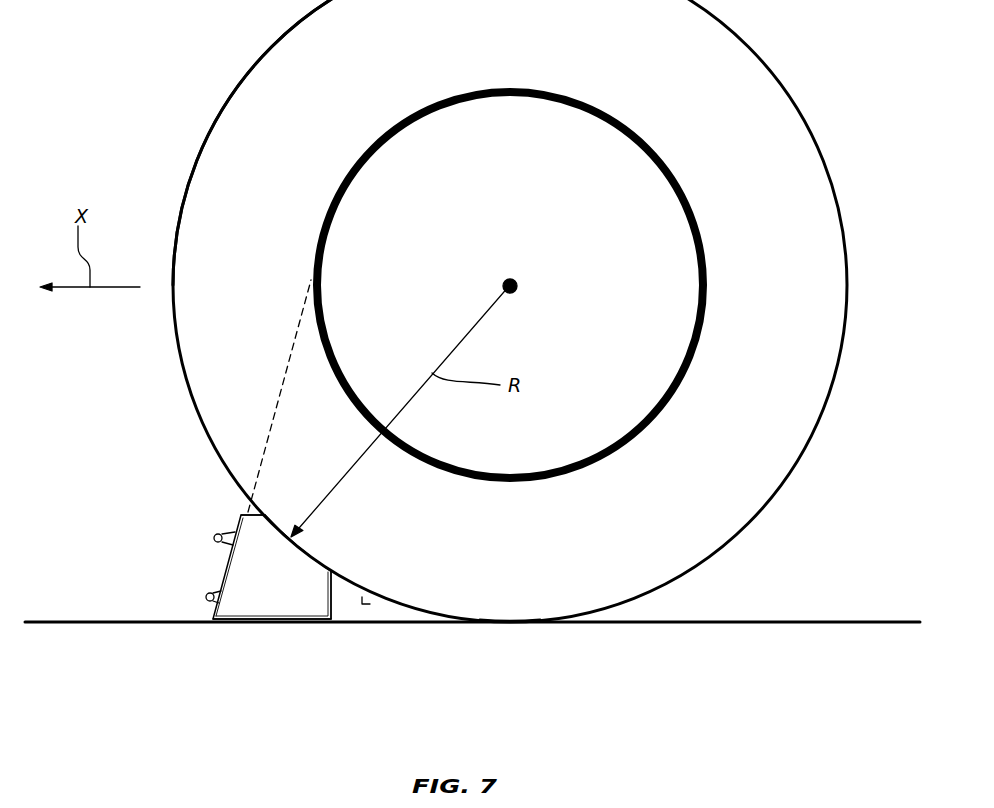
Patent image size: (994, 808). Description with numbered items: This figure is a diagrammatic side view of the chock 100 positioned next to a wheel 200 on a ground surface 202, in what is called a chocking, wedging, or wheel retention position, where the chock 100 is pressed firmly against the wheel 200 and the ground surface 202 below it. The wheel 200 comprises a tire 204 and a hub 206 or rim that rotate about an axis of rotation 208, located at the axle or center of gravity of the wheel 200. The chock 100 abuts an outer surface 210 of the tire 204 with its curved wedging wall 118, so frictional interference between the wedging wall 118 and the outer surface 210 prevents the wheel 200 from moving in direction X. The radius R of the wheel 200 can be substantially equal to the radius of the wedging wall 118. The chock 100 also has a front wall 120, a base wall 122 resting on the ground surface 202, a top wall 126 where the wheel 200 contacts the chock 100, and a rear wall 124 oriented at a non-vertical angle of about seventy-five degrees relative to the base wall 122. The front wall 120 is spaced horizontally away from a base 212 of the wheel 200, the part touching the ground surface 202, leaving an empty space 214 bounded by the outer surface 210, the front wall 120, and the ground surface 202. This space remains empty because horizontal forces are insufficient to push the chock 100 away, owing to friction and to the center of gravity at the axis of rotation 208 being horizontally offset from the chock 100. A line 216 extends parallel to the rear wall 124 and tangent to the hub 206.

The chock 100 is at (294, 568).
The wedging wall 118 is at (306, 548).
The front wall 120 is at (333, 597).
The base wall 122 is at (272, 624).
The rear wall 124 is at (222, 572).
The top wall 126 is at (243, 511).
The wheel 200 is at (452, 347).
The ground surface 202 is at (66, 620).
The tire 204 is at (373, 77).
The hub 206 is at (512, 210).
The axis of rotation 208 is at (517, 275).
The outer surface 210 is at (178, 345).
The base 212 is at (509, 625).
The empty space 214 is at (365, 600).
The line 216 is at (270, 380).